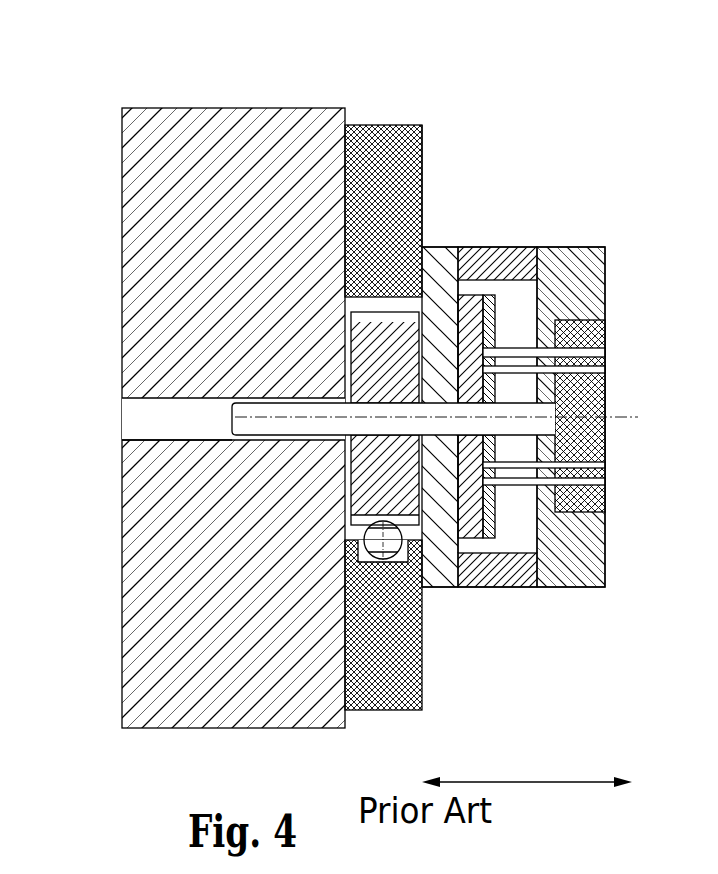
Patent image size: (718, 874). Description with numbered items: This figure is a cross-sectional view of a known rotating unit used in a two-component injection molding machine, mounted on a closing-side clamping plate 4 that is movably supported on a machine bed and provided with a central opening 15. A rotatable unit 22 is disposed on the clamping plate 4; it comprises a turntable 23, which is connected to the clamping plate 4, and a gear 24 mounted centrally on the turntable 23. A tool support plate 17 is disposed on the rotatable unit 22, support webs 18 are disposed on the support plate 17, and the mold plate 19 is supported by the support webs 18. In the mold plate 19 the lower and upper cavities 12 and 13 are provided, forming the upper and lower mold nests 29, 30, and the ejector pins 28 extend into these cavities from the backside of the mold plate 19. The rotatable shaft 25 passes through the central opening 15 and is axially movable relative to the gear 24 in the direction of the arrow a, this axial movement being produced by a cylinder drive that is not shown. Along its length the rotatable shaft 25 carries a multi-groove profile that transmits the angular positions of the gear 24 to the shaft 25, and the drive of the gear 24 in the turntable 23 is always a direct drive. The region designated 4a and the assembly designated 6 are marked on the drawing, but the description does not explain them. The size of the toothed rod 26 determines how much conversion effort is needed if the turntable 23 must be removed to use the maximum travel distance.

The closing-side clamping plate 4 is at (270, 710).
The gap 4a is at (467, 146).
The assembly 6 is at (613, 610).
The lower cavity 12 is at (592, 478).
The upper cavity 13 is at (594, 378).
The central opening 15 is at (168, 412).
The tool support plate 17 is at (472, 250).
The support webs 18 is at (530, 250).
The mold plate 19 is at (603, 250).
The rotatable unit 22 is at (420, 94).
The turntable 23 is at (432, 692).
The gear 24 is at (436, 497).
The rotatable shaft 25 is at (237, 420).
The toothed rod 26 is at (427, 570).
The ejector pins 28 is at (595, 358).
The upper mold nest 29 is at (612, 383).
The lower mold nest 30 is at (618, 444).
The arrow a is at (527, 795).